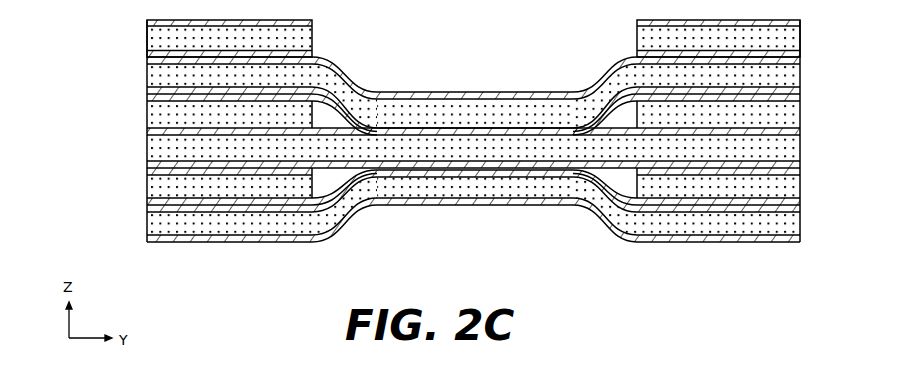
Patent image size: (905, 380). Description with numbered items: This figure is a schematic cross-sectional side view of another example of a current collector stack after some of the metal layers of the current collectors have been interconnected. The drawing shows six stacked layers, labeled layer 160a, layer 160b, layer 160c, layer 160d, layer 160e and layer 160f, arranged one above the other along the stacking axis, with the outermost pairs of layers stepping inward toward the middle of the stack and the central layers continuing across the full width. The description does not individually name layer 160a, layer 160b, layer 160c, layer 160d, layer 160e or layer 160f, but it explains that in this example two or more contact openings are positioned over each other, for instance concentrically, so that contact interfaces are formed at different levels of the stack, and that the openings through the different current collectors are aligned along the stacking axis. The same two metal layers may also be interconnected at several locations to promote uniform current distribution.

The first stacked layer 160a is at (142, 20).
The second stacked layer 160b is at (142, 57).
The third stacked layer 160c is at (142, 94).
The fourth stacked layer 160d is at (142, 135).
The fifth stacked layer 160e is at (142, 168).
The sixth stacked layer 160f is at (142, 205).